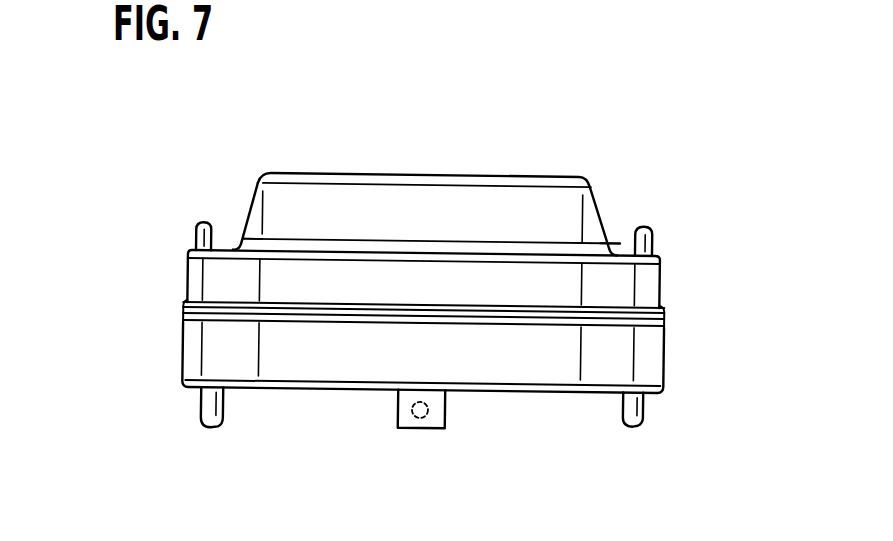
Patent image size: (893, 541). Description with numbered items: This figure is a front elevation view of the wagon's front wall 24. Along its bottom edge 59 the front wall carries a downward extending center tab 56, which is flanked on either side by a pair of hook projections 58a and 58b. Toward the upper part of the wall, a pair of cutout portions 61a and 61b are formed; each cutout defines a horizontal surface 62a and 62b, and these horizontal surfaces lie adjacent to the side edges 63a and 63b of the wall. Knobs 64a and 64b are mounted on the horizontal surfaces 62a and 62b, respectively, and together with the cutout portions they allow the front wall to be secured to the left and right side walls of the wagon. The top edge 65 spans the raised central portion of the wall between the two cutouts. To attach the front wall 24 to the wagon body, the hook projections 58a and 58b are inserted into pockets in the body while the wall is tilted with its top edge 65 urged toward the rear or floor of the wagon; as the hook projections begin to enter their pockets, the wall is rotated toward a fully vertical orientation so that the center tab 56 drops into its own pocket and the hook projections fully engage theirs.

The front wall 24 is at (126, 343).
The center tab 56 is at (425, 430).
The hook projection 58a is at (637, 428).
The hook projection 58b is at (215, 428).
The bottom edge 59 is at (552, 394).
The cutout portion 61a is at (612, 160).
The cutout portion 61b is at (238, 158).
The horizontal surface 62a is at (624, 254).
The horizontal surface 62b is at (233, 246).
The side edge 63a is at (667, 297).
The side edge 63b is at (187, 297).
The knob 64a is at (654, 241).
The knob 64b is at (193, 240).
The top edge 65 is at (412, 172).